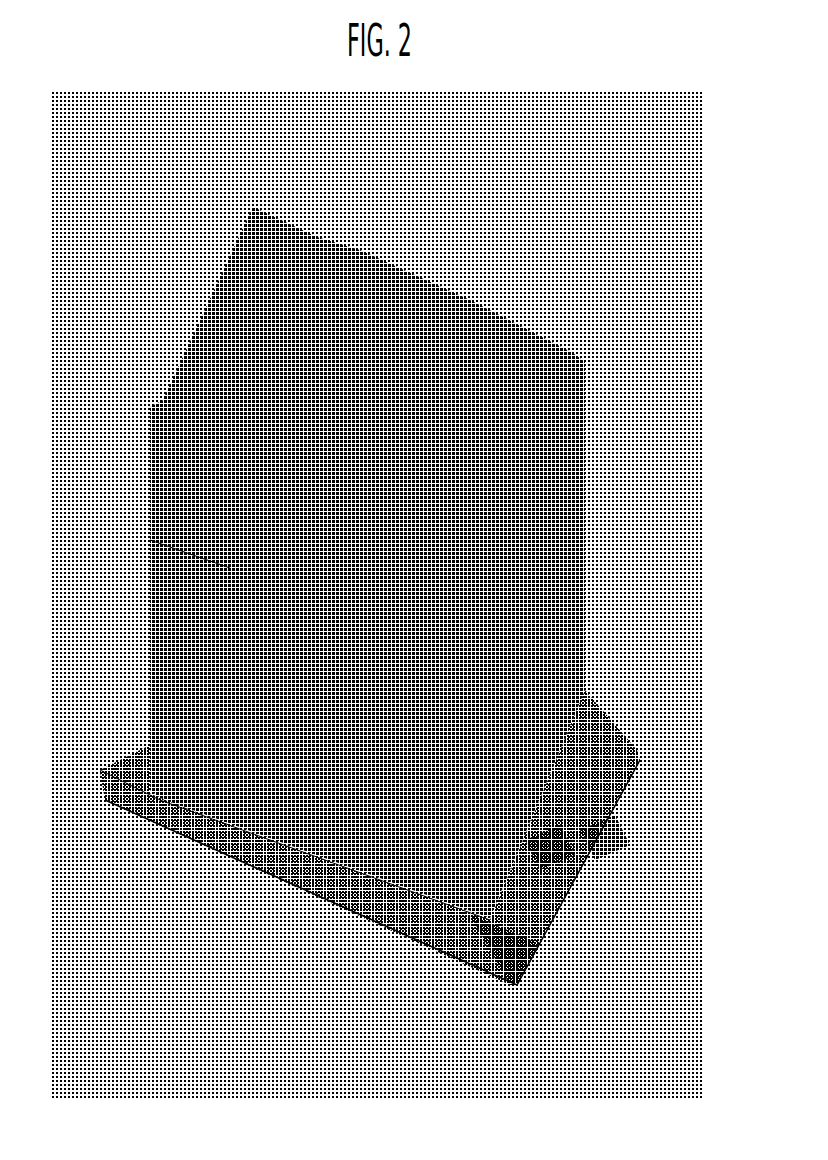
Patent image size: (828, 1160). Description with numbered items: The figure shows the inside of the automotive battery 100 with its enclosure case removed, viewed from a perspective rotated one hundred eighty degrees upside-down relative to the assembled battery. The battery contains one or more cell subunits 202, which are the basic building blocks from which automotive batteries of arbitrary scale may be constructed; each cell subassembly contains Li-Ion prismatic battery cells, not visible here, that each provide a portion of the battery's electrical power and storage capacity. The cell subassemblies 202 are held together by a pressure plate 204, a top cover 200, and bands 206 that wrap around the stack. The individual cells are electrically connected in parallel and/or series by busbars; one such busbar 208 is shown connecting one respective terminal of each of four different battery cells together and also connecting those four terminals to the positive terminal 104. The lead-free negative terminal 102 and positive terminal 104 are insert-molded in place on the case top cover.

The automotive battery 100 is at (415, 240).
The negative terminal 102 is at (153, 823).
The positive terminal 104 is at (513, 980).
The top cover 200 is at (618, 713).
The cell subunits 202 is at (148, 497).
The pressure plate 204 is at (227, 263).
The bands 206 is at (478, 310).
The busbar 208 is at (629, 823).